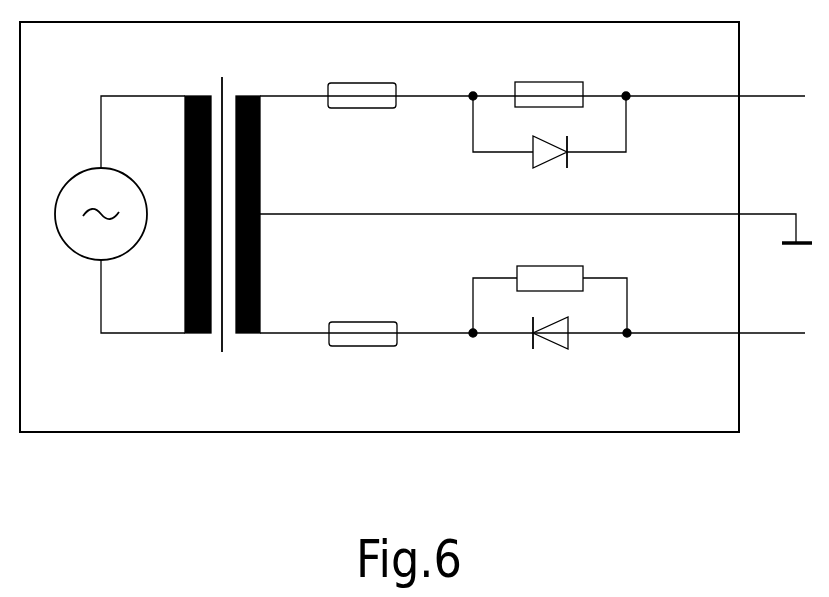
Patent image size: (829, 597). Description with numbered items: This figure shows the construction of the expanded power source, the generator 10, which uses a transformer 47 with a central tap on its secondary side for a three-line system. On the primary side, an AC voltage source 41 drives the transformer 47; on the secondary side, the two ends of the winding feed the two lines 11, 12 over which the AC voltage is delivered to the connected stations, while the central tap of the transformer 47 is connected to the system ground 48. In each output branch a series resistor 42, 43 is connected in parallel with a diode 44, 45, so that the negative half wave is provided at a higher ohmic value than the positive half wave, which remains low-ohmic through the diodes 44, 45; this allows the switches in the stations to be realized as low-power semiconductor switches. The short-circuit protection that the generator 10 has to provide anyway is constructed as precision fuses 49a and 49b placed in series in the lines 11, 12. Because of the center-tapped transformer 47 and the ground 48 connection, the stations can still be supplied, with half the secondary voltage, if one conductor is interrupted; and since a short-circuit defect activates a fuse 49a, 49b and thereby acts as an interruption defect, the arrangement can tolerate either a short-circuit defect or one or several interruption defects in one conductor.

The generator 10 is at (653, 432).
The line 11 is at (768, 93).
The line 12 is at (769, 334).
The AC voltage source 41 is at (78, 172).
The series resistor 42 is at (555, 83).
The series resistor 43 is at (590, 273).
The diode 44 is at (533, 143).
The diode 45 is at (570, 336).
The transformer 47 is at (245, 334).
The system ground 48 is at (786, 248).
The precision fuse 49a is at (373, 110).
The precision fuse 49b is at (347, 320).